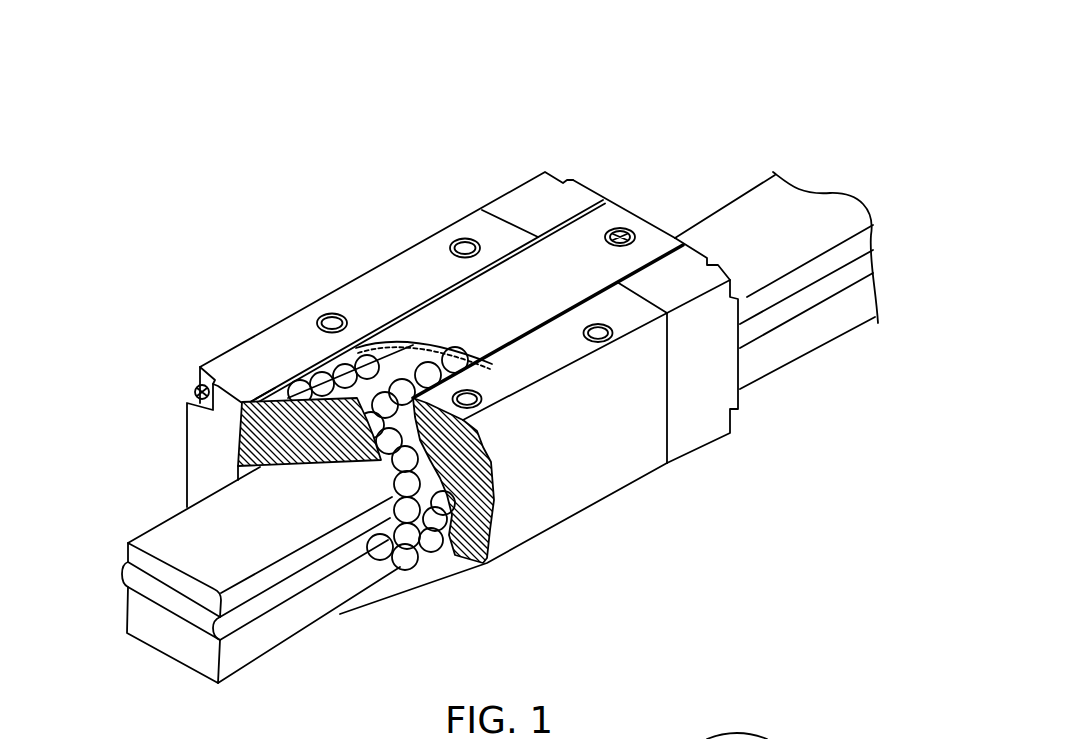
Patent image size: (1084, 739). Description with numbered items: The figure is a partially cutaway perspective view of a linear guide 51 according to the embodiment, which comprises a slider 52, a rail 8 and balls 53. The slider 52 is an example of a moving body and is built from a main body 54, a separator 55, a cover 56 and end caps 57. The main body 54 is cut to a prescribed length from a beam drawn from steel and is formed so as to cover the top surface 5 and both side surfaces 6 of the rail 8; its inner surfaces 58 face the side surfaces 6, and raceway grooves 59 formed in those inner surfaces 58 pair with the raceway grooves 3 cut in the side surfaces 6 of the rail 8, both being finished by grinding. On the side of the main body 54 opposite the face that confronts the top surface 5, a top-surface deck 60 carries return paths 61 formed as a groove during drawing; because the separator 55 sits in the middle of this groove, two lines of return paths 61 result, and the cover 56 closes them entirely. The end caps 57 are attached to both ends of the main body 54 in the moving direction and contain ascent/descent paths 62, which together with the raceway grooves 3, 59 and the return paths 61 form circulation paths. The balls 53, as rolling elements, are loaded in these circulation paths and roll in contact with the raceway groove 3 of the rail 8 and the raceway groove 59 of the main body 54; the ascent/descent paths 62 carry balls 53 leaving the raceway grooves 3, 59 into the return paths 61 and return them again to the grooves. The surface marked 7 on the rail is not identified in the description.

The linear guide 51 is at (624, 100).
The slider 52 is at (467, 201).
The balls 53 is at (352, 352).
The main body 54 is at (598, 487).
The separator 55 is at (373, 372).
The cover 56 is at (608, 217).
The end caps 57 is at (228, 357).
The inner surfaces 58 is at (232, 468).
The raceway grooves 59 is at (490, 517).
The top-surface deck 60 is at (532, 368).
The return paths 61 is at (437, 347).
The ascent/descent paths 62 is at (262, 390).
The top surface 5 is at (767, 202).
The rail 8 is at (813, 363).
The raceway grooves 3 is at (124, 572).
The side surfaces 6 is at (126, 604).
The bottom surface of rail 7 is at (165, 657).